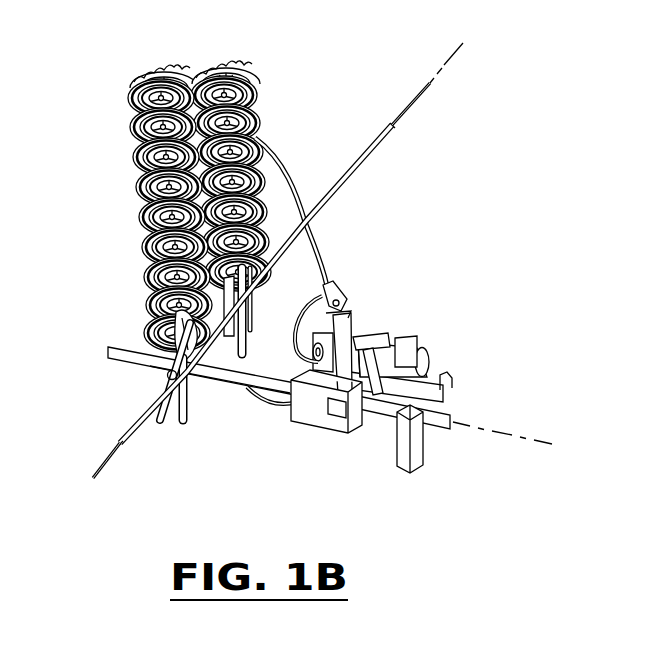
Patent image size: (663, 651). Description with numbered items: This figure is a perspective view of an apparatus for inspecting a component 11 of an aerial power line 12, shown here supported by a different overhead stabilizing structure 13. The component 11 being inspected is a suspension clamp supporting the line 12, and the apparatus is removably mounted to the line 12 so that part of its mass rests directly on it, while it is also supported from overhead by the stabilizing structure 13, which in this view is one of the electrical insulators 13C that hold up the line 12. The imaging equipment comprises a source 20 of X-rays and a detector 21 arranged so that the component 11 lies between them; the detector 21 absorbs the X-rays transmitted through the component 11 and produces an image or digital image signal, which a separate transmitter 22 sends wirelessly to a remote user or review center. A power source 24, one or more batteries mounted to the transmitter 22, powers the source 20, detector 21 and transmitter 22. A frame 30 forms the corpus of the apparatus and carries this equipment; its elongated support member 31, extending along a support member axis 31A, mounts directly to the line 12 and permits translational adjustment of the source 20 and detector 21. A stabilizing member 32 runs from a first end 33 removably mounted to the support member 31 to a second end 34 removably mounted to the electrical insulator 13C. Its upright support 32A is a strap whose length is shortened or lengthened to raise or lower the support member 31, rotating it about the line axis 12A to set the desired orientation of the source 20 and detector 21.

The component 11 is at (185, 305).
The aerial power line 12 is at (306, 260).
The line axis 12A is at (447, 62).
The stabilizing structure 13 is at (201, 184).
The electrical insulator 13C is at (240, 64).
The source 20 is at (406, 346).
The detector 21 is at (172, 326).
The transmitter 22 is at (324, 433).
The power source 24 is at (336, 420).
The frame 30 is at (312, 370).
The support member 31 is at (228, 386).
The support member axis 31A is at (529, 438).
The stabilizing member 32 is at (327, 242).
The upright support 32A is at (315, 235).
The first end 33 is at (348, 290).
The second end 34 is at (250, 92).